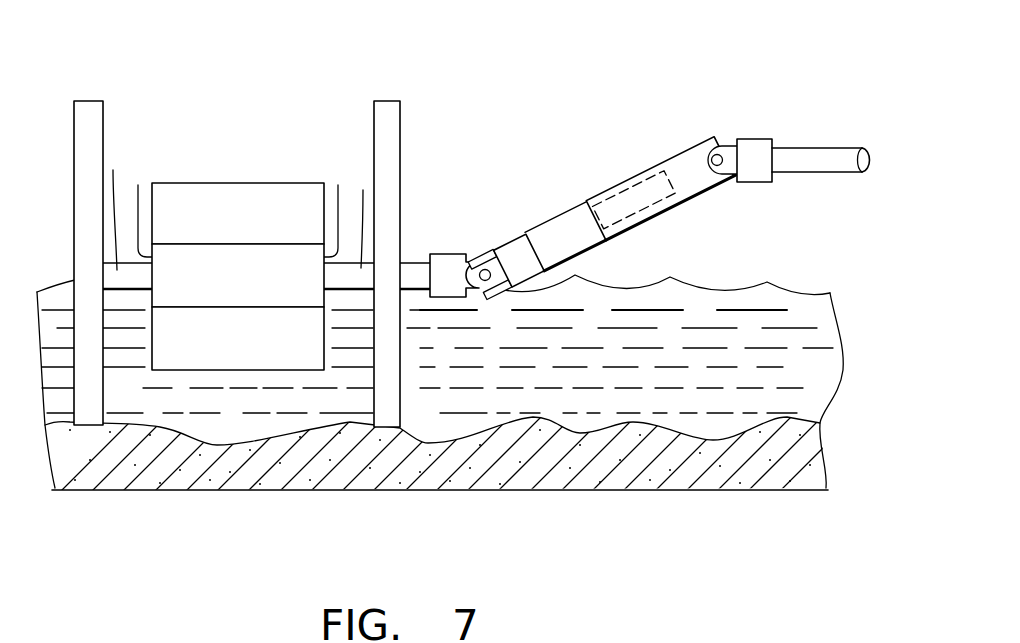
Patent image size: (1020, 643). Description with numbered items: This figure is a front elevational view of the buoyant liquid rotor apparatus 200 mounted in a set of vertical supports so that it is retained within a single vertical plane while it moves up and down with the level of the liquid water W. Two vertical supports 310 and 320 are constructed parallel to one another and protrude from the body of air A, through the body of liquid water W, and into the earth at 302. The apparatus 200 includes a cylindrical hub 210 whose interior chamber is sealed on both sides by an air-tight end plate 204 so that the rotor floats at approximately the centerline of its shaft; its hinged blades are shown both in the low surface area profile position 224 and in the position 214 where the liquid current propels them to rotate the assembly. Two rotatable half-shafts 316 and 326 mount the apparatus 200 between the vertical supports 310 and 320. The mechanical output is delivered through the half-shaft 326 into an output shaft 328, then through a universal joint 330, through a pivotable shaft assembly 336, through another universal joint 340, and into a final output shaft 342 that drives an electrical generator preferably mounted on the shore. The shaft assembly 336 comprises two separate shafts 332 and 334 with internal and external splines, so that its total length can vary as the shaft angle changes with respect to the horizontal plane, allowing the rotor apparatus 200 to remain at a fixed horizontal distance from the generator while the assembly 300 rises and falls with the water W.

The liquid rotor apparatus 200 is at (244, 132).
The air-tight end plate 204 is at (138, 185).
The cylindrical hub 210 is at (286, 289).
The blades 214 is at (286, 349).
The blades 224 is at (218, 223).
The actuator assembly 300 is at (583, 92).
The earth 302 is at (434, 486).
The vertical support 310 is at (89, 101).
The rotatable half-shaft 316 is at (113, 170).
The vertical support 320 is at (389, 101).
The rotatable half-shaft 326 is at (363, 190).
The output shaft 328 is at (413, 268).
The universal joint 330 is at (490, 233).
The shaft 332 is at (565, 245).
The shaft 334 is at (683, 194).
The pivotable shaft assembly 336 is at (606, 167).
The universal joint 340 is at (734, 120).
The final output shaft 342 is at (795, 147).
The body of air A is at (692, 42).
The body of liquid water W is at (222, 438).